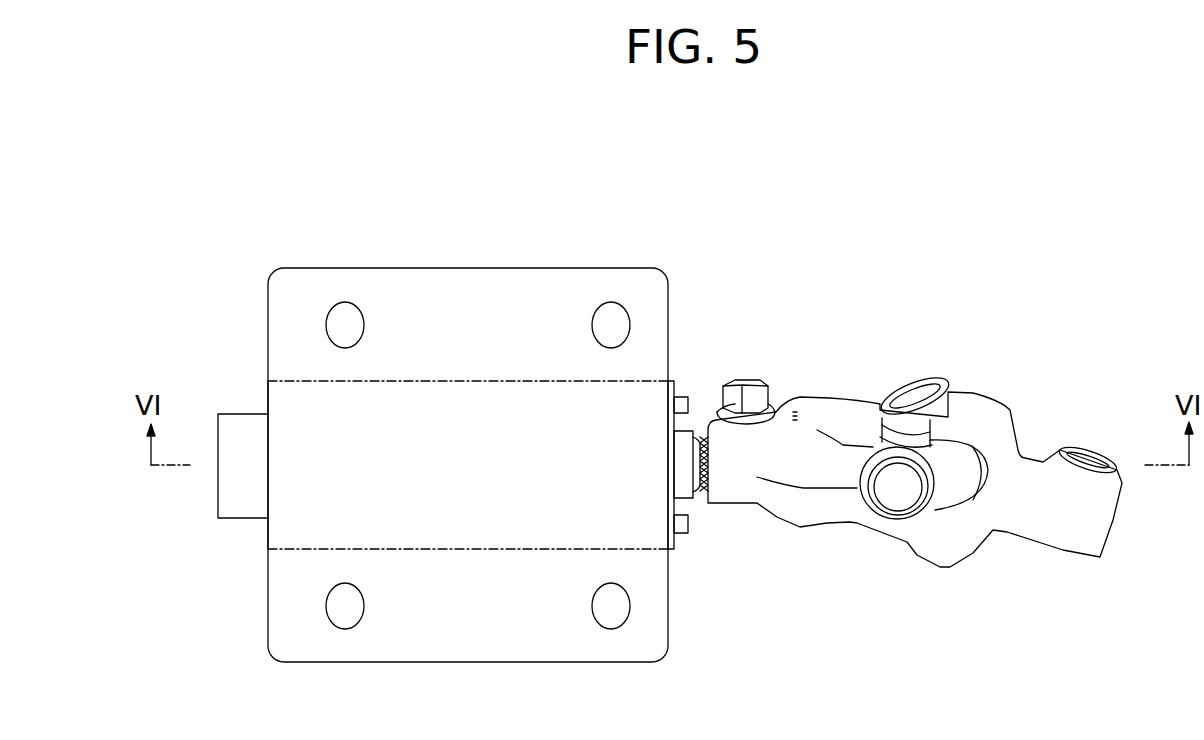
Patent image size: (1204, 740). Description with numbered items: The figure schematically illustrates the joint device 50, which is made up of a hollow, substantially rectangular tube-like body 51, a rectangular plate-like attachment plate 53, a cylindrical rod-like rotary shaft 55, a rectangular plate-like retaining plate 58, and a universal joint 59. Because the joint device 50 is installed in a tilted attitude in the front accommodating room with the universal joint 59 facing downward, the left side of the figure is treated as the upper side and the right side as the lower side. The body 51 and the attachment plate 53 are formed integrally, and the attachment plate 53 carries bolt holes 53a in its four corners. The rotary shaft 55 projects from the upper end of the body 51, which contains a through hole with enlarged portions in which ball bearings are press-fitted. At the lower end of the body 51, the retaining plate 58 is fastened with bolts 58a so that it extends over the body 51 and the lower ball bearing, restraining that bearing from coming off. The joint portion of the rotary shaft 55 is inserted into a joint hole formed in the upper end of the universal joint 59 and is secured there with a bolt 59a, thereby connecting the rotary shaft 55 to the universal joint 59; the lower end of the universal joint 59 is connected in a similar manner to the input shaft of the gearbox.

The joint device 50 is at (458, 412).
The body 51 is at (293, 524).
The attachment plate 53 is at (493, 298).
The bolt holes 53a is at (345, 318).
The rotary shaft 55 is at (243, 424).
The retaining plate 58 is at (678, 543).
The bolts 58a is at (690, 403).
The universal joint 59 is at (947, 537).
The bolt 59a is at (752, 386).